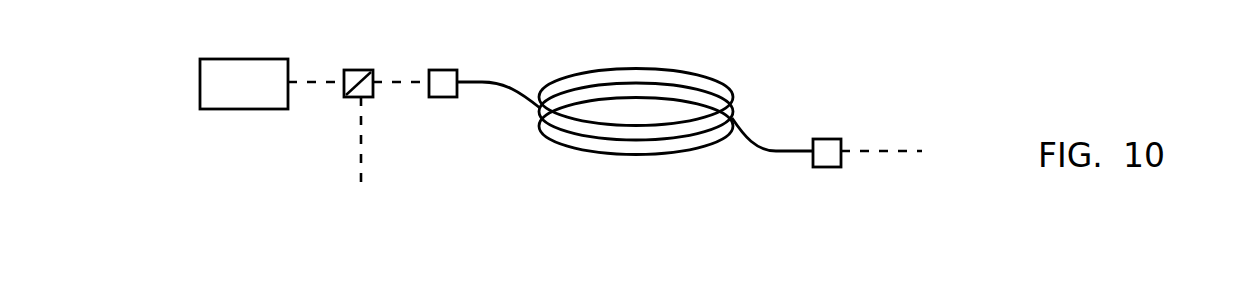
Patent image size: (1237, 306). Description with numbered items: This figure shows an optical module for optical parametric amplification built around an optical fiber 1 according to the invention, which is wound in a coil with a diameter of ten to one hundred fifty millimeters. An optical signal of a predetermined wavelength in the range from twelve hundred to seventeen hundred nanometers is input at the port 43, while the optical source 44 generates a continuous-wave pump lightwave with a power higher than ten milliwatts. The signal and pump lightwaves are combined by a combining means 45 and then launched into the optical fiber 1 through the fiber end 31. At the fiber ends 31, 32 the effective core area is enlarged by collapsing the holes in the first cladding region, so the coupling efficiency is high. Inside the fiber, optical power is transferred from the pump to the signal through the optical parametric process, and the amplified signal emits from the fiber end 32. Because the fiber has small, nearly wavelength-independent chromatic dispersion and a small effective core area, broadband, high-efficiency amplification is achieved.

The optical fiber 1 is at (635, 103).
The fiber end 31 is at (445, 69).
The fiber end 32 is at (824, 138).
The port 43 is at (344, 145).
The optical source 44 is at (244, 68).
The combining means 45 is at (360, 69).